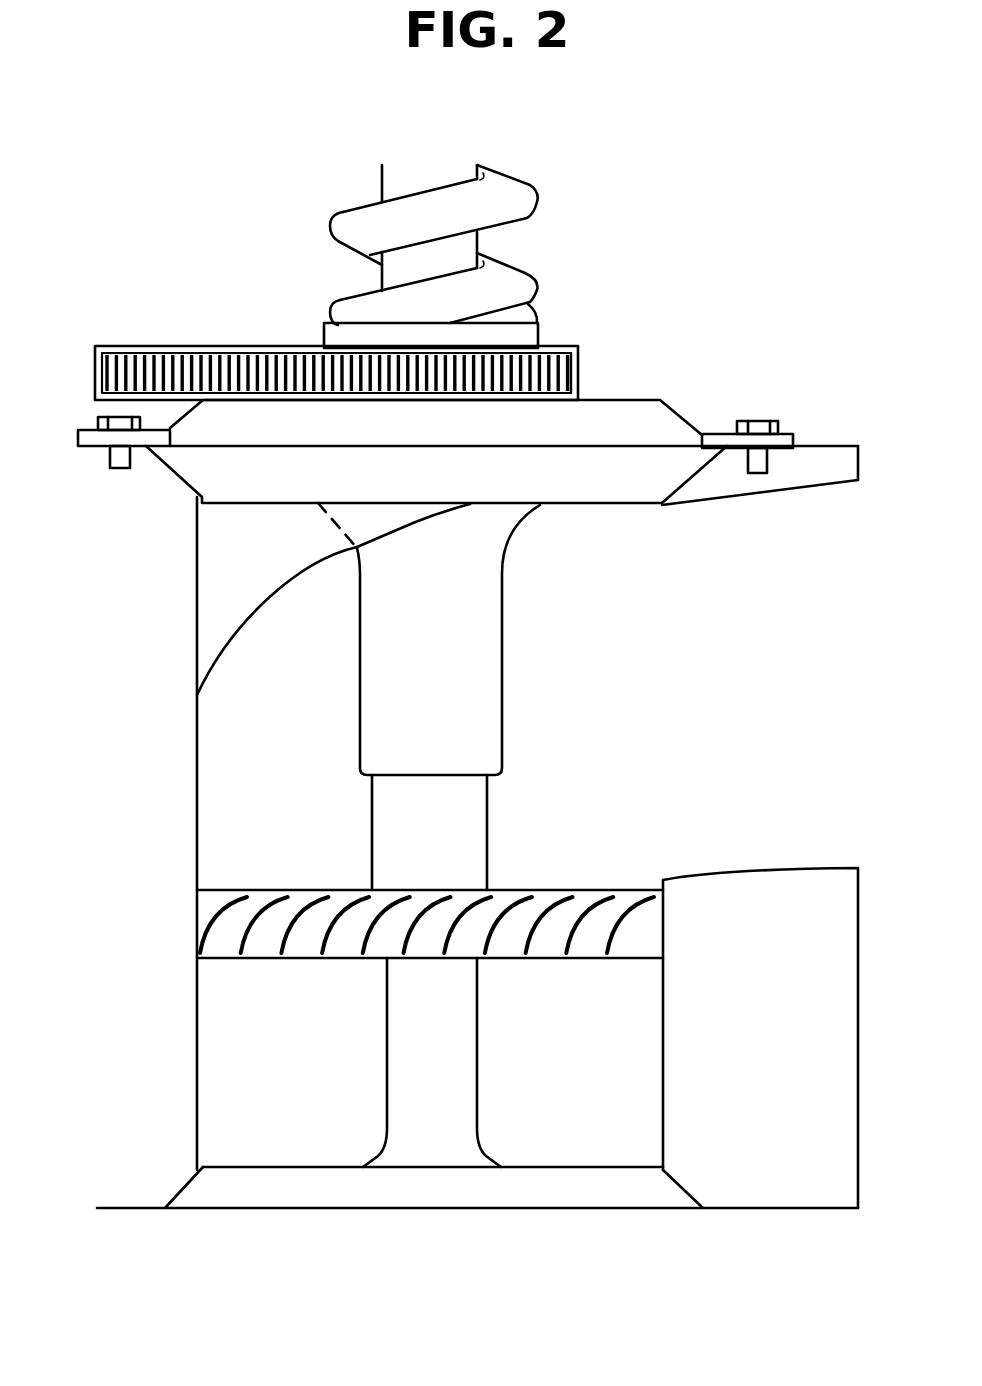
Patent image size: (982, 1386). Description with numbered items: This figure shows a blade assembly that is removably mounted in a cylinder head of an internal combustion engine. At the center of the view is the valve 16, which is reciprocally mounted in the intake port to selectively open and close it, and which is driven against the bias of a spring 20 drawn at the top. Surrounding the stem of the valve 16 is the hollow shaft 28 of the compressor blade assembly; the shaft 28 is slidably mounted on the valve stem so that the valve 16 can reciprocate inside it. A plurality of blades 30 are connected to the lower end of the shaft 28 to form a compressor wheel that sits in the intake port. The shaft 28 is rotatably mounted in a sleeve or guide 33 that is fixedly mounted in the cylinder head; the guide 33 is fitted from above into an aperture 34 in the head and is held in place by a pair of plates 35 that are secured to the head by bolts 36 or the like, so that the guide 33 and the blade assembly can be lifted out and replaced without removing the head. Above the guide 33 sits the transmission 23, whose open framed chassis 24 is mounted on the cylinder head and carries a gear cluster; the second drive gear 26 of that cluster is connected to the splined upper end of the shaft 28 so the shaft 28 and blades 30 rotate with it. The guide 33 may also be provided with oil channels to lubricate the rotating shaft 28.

The valve 16 is at (307, 1167).
The spring 20 is at (537, 285).
The transmission 23 is at (285, 348).
The open framed chassis 24 is at (95, 370).
The second drive gear 26 is at (578, 368).
The hollow shaft 28 is at (487, 845).
The blades 30 is at (313, 888).
The sleeve or guide 33 is at (502, 665).
The aperture 34 is at (632, 507).
The plates 35 is at (710, 433).
The bolts 36 is at (770, 420).